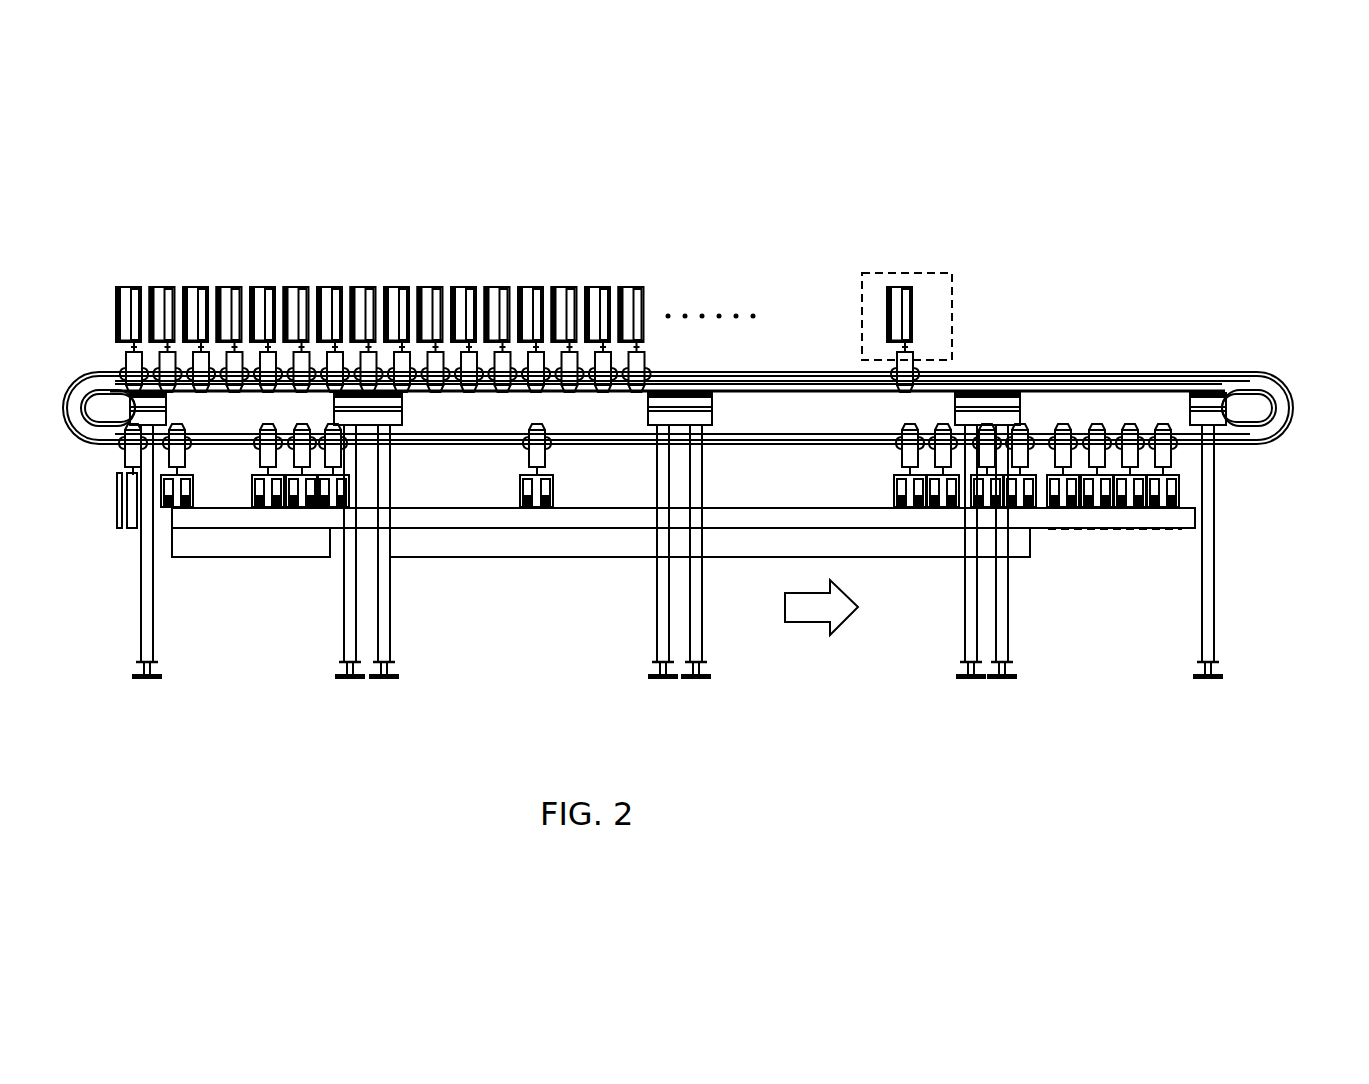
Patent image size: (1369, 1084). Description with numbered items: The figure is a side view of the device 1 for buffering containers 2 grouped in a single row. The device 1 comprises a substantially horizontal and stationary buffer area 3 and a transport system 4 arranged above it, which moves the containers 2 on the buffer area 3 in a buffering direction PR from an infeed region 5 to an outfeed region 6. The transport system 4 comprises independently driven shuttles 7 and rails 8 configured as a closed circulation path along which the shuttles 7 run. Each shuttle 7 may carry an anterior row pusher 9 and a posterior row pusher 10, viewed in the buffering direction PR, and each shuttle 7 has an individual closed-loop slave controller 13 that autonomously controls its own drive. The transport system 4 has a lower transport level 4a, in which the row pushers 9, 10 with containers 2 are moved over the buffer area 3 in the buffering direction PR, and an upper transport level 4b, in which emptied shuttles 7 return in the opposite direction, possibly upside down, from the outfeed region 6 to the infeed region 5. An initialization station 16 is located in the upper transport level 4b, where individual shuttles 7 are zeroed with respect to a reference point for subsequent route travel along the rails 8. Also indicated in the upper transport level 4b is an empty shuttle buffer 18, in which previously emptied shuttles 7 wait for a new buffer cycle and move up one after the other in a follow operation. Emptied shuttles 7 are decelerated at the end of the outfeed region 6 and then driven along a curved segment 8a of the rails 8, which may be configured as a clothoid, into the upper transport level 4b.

The device 1 is at (1103, 226).
The containers 2 is at (541, 514).
The buffer area 3 is at (780, 507).
The transport system 4 is at (100, 352).
The lower transport level 4a is at (1298, 456).
The upper transport level 4b is at (1298, 361).
The infeed region 5 is at (125, 538).
The outfeed region 6 is at (1118, 540).
The shuttles 7 is at (593, 280).
The rails 8 is at (1143, 368).
The curved segment 8a is at (1276, 372).
The anterior row pusher 9 is at (562, 490).
The posterior row pusher 10 is at (512, 490).
The closed-loop slave controller 13 is at (912, 358).
The initialization station 16 is at (929, 272).
The empty shuttle buffer 18 is at (292, 270).
The buffering direction PR is at (803, 612).